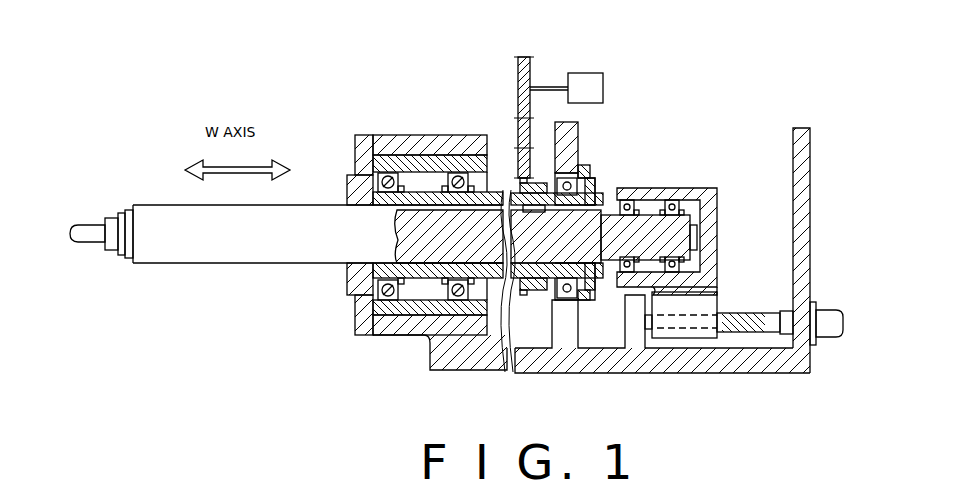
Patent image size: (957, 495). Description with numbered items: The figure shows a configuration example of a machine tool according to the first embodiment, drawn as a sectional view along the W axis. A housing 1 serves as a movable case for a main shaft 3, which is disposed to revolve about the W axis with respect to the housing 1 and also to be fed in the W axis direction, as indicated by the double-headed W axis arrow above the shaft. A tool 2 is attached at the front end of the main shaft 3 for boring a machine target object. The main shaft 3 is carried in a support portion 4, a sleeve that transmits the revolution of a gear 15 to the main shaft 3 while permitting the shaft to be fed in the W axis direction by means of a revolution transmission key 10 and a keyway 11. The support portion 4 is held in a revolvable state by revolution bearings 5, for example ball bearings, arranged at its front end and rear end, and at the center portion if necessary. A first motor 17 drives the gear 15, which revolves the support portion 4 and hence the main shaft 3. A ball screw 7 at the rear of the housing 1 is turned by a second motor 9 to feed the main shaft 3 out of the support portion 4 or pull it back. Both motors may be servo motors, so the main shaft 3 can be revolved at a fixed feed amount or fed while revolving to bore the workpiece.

The housing 1 is at (464, 358).
The tool 2 is at (88, 232).
The main shaft 3 is at (207, 248).
The support portion 4 is at (346, 280).
The revolution bearing 5 is at (390, 300).
The ball screw 7 is at (740, 320).
The second motor 9 is at (828, 318).
The revolution transmission key 10 is at (518, 195).
The keyway 11 is at (603, 190).
The gear 15 is at (518, 77).
The first motor 17 is at (582, 82).